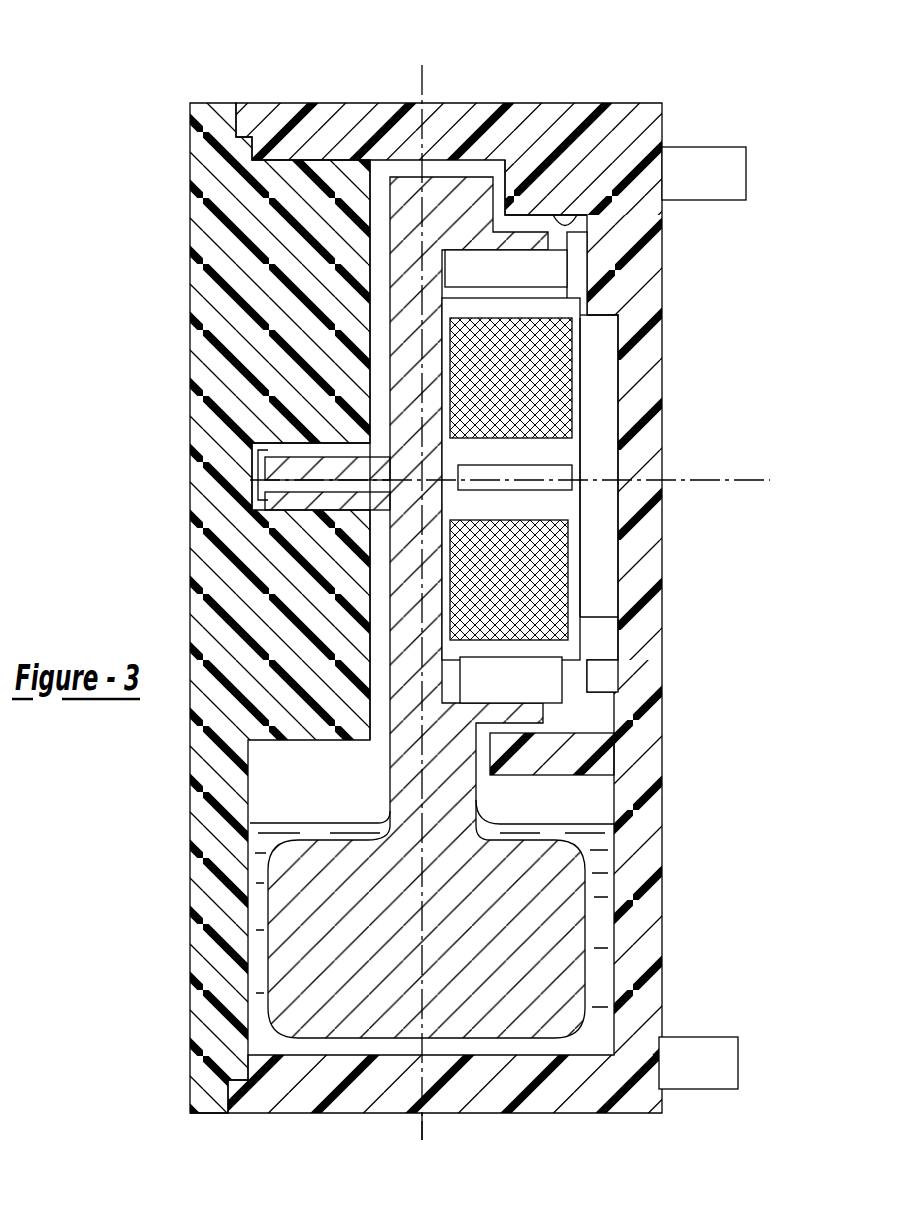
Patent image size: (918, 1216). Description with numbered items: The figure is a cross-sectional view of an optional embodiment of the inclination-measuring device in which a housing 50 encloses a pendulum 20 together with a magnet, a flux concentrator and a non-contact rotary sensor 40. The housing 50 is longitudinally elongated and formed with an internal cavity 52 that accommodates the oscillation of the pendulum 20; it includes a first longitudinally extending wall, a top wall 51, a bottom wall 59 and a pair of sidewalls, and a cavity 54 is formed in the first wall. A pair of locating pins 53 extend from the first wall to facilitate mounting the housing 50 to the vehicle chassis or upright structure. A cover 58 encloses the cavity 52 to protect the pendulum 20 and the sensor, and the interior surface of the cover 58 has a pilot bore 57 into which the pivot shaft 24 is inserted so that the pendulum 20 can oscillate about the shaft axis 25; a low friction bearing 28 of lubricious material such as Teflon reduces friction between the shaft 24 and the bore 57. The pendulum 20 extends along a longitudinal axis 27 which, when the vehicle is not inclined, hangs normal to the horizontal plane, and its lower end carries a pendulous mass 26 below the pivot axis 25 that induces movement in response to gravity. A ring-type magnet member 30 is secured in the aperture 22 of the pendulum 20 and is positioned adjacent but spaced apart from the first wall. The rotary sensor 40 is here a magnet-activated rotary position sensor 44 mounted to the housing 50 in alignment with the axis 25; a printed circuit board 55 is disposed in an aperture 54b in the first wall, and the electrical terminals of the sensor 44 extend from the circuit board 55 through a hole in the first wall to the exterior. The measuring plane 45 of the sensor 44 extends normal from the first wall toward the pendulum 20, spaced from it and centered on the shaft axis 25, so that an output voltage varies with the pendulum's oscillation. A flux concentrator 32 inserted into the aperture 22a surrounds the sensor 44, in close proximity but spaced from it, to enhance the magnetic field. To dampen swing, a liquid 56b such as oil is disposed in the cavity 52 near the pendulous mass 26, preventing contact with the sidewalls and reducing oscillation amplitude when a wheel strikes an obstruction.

The pendulum 20 is at (388, 269).
The aperture 22 is at (560, 750).
The aperture 22a is at (492, 366).
The pivot shaft 24 is at (270, 500).
The axis 25 is at (330, 535).
The pendulous mass 26 is at (320, 963).
The longitudinal axis 27 is at (428, 1120).
The low friction bearing 28 is at (296, 443).
The magnet member 30 is at (550, 263).
The flux concentrator 32 is at (540, 385).
The rotary sensor 40 is at (776, 440).
The rotary position sensor 44 is at (565, 478).
The measuring plane 45 is at (565, 470).
The housing 50 is at (662, 930).
The top wall 51 is at (580, 103).
The internal cavity 52 is at (317, 805).
The locating pins 53 is at (746, 175).
The cavity 54 is at (592, 214).
The aperture 54b is at (617, 318).
The printed circuit board 55 is at (600, 515).
The liquid 56b is at (258, 848).
The pilot bore 57 is at (258, 455).
The cover 58 is at (190, 1083).
The bottom wall 59 is at (580, 1082).